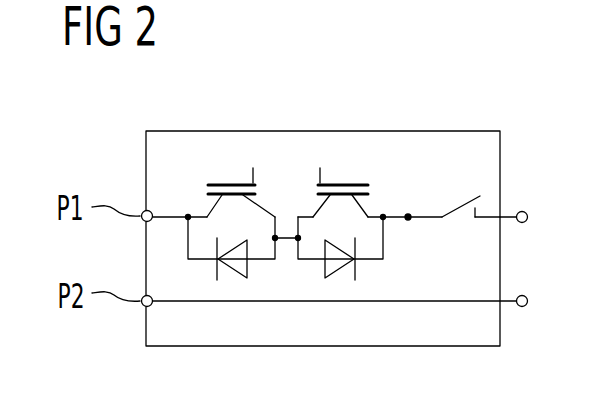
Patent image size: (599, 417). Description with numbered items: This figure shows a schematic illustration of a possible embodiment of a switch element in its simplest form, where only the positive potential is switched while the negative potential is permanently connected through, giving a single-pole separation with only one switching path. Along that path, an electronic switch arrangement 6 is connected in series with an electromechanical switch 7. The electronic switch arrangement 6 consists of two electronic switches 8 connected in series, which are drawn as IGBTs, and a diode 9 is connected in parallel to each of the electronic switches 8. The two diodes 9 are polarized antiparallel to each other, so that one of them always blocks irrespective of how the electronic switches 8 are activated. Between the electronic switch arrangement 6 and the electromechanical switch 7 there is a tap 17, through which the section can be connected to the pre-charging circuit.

The electronic switch arrangement 6 is at (284, 109).
The electromechanical switch 7 is at (468, 178).
The electronic switch 8 is at (228, 184).
The diode 9 is at (232, 271).
The tap 17 is at (408, 214).